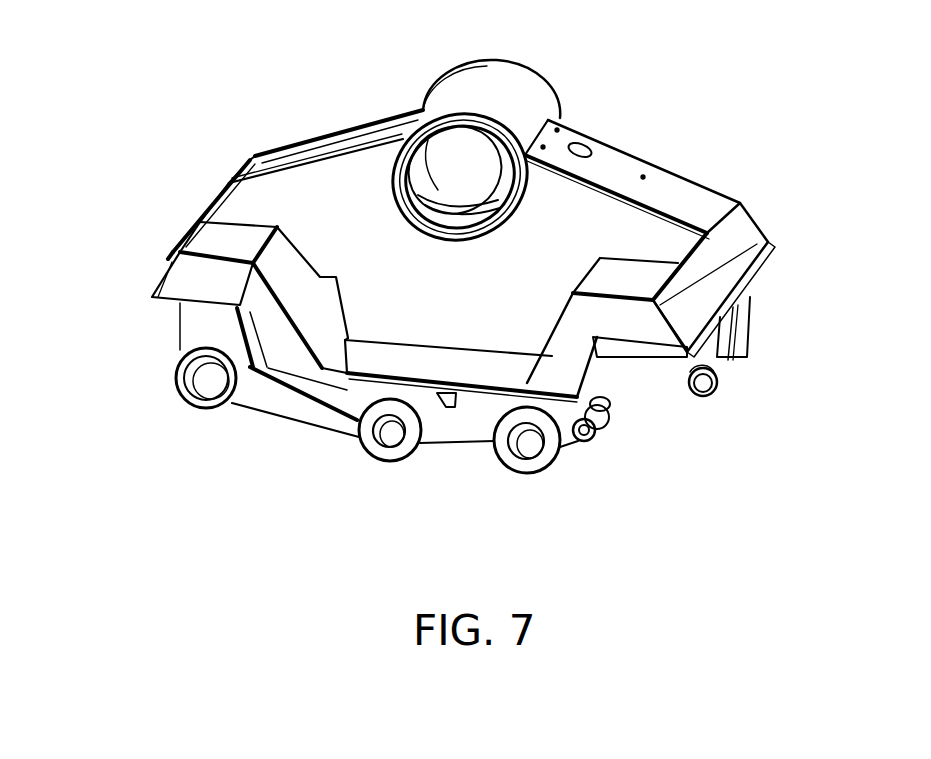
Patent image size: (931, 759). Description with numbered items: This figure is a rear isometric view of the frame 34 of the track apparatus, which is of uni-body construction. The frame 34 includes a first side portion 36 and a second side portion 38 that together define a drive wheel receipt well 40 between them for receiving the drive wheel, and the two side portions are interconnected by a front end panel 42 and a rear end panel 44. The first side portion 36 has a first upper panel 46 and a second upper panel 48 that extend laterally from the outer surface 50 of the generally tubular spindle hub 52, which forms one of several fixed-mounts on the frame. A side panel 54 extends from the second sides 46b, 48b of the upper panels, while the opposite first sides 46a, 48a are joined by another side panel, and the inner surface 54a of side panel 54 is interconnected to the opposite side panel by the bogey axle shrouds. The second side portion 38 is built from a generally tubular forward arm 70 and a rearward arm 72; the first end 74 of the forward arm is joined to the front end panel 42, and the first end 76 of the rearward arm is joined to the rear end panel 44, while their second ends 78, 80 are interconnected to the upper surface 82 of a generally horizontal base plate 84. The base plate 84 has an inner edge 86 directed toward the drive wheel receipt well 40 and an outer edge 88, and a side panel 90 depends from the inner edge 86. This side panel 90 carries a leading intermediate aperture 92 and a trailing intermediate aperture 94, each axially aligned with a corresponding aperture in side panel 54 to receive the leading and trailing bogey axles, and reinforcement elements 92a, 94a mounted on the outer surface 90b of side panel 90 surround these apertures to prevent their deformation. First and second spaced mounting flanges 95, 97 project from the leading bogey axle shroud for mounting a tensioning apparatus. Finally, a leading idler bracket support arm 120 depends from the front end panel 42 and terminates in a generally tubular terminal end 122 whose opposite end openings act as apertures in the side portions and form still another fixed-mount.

The frame 34 is at (157, 460).
The first side portion 36 is at (263, 150).
The second side portion 38 is at (182, 252).
The drive wheel receipt well 40 is at (258, 202).
The front end panel 42 is at (740, 253).
The rear end panel 44 is at (213, 205).
The first upper panel 46 is at (373, 130).
The first side of first upper panel 46a is at (320, 133).
The second side of first upper panel 46b is at (330, 170).
The second upper panel 48 is at (606, 156).
The first side of second upper panel 48a is at (638, 157).
The second side of second upper panel 48b is at (582, 183).
The outer surface of spindle hub 50 is at (515, 117).
The spindle hub 52 is at (457, 83).
The side panel 54 is at (423, 265).
The inner surface of side panel 54a is at (327, 246).
The forward arm 70 is at (663, 333).
The rearward arm 72 is at (175, 283).
The first end of forward arm 74 is at (657, 270).
The first end of rearward arm 76 is at (195, 240).
The second end of forward arm 78 is at (578, 405).
The second end of rearward arm 80 is at (257, 410).
The upper surface of base plate 82 is at (377, 350).
The base plate 84 is at (292, 358).
The inner edge of base plate 86 is at (425, 347).
The outer edge of base plate 88 is at (337, 367).
The side panel 90 is at (477, 443).
The outer surface of side panel 90b is at (493, 403).
The leading intermediate aperture 92 is at (518, 452).
The reinforcement element 92a is at (540, 460).
The trailing intermediate aperture 94 is at (372, 450).
The reinforcement element 94a is at (402, 450).
The first mounting flange 95 is at (610, 413).
The second mounting flange 97 is at (590, 447).
The leading idler bracket support arm 120 is at (742, 329).
The tubular terminal end 122 is at (713, 393).